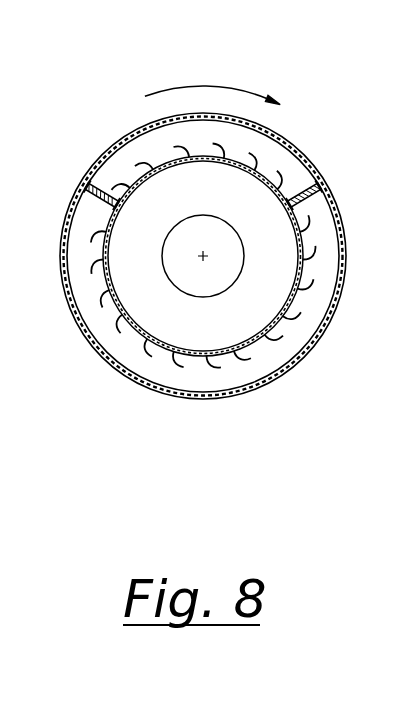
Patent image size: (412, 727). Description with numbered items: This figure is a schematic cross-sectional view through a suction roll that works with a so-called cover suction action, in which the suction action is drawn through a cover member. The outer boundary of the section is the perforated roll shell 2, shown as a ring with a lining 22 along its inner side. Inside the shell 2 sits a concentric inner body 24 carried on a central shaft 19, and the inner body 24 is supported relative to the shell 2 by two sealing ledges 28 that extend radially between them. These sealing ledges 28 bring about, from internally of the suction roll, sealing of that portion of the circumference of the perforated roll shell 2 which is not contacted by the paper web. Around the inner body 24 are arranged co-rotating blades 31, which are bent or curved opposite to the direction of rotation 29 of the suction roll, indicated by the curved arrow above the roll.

The perforated roll shell 2 is at (103, 363).
The housing wall lining 22 is at (218, 393).
The sealing ledges 28 is at (83, 180).
The direction of rotation 29 is at (212, 88).
The co-rotating blades 31 is at (297, 320).
The brush drum 24 is at (217, 270).
The shaft 19 is at (277, 319).